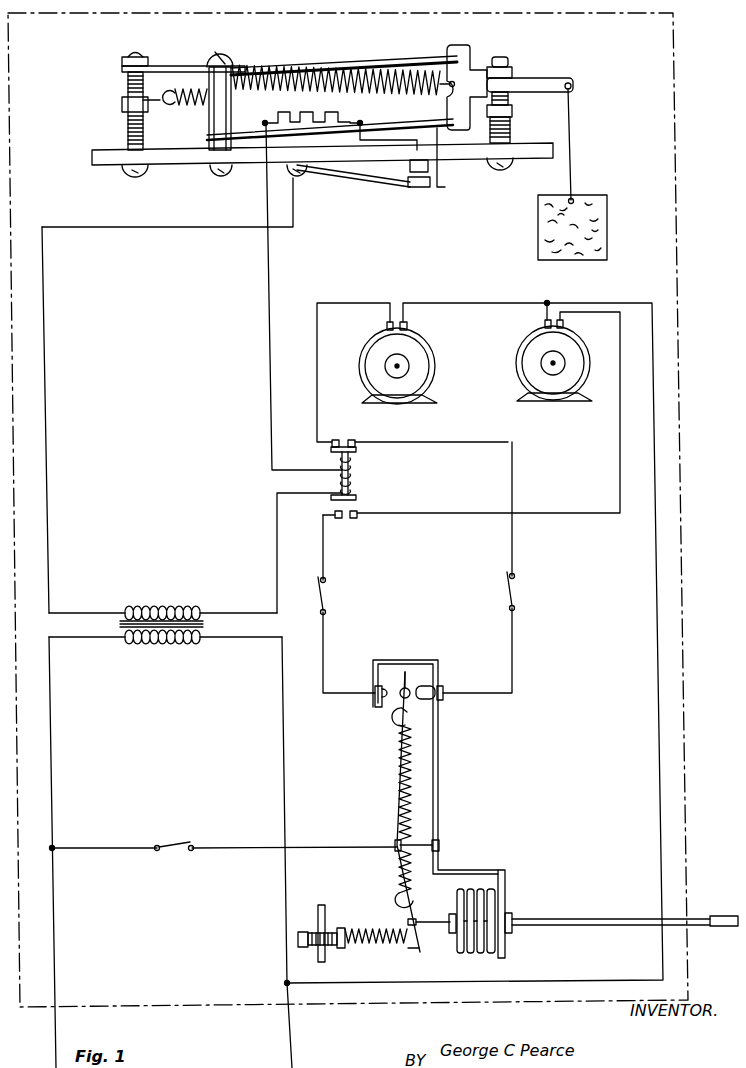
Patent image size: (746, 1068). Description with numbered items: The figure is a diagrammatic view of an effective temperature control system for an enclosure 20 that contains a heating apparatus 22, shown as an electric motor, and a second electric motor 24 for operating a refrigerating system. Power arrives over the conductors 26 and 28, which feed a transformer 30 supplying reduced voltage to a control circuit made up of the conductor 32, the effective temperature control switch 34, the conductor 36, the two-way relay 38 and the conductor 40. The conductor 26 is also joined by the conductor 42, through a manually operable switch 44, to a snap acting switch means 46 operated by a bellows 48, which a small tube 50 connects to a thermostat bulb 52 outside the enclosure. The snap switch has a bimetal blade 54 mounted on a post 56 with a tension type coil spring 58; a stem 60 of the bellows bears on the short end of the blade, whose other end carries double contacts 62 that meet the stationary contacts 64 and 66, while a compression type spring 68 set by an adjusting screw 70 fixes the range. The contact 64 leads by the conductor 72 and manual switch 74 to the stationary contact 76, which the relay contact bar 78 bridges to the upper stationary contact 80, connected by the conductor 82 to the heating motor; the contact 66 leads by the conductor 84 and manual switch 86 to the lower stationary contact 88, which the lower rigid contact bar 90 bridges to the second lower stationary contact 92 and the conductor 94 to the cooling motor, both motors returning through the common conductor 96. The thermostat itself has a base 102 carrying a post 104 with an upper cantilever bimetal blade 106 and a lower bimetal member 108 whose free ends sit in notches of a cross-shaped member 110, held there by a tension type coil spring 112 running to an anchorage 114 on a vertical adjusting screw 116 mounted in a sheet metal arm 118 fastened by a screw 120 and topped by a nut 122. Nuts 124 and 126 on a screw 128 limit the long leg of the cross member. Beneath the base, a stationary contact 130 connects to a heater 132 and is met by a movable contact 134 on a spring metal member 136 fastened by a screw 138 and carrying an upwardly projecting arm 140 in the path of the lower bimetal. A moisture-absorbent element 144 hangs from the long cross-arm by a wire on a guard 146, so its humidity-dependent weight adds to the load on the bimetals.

The enclosure 20 is at (674, 298).
The heating apparatus 22 is at (417, 350).
The electric motor 24 is at (573, 352).
The electrical conductor 26 is at (54, 1050).
The electrical conductor 28 is at (292, 1063).
The transformer 30 is at (140, 642).
The conductor 32 is at (48, 498).
The effective temperature control switch 34 is at (385, 187).
The conductor 36 is at (272, 372).
The two-way relay 38 is at (352, 474).
The conductor 40 is at (277, 580).
The conductor 42 is at (212, 846).
The manually operable switch 44 is at (180, 843).
The snap acting switch means 46 is at (438, 807).
The bellows 48 is at (460, 955).
The small tube 50 is at (568, 919).
The thermostat bulb 52 is at (724, 918).
The bimetal blade 54 is at (398, 819).
The post 56 is at (425, 841).
The tension type coil spring 58 is at (422, 770).
The stem 60 is at (428, 930).
The double contacts 62 is at (400, 697).
The stationary contact 64 is at (427, 690).
The stationary contact 66 is at (368, 700).
The compression type spring 68 is at (386, 930).
The adjusting screw 70 is at (308, 935).
The conductor 72 is at (514, 657).
The manual switch 74 is at (514, 587).
The stationary contact 76 is at (352, 439).
The relay contact bar 78 is at (356, 450).
The upper stationary contact 80 is at (335, 439).
The conductor 82 is at (317, 381).
The conductor 84 is at (326, 637).
The manual switch 86 is at (322, 597).
The lower stationary contact 88 is at (340, 520).
The lower rigid contact bar 90 is at (357, 498).
The second lower stationary contact 92 is at (357, 520).
The conductor 94 is at (452, 513).
The common conductor 96 is at (657, 708).
The base 102 is at (191, 160).
The post 104 is at (231, 157).
The cantilever bimetal blade 106 is at (355, 66).
The second resilient cantilever bimetal member 108 is at (405, 126).
The cross-shaped member 110 is at (462, 105).
The tension type coil spring 112 is at (444, 60).
The anchorage 114 is at (163, 100).
The vertical adjusting screw 116 is at (129, 135).
The sheet metal arm 118 is at (183, 57).
The screw 120 is at (225, 62).
The nut 122 is at (122, 61).
The nut 124 is at (515, 73).
The nut 126 is at (513, 112).
The screw 128 is at (509, 133).
The stationary contact 130 is at (430, 167).
The heater 132 is at (265, 121).
The movable contact 134 is at (430, 186).
The spring metal member 136 is at (364, 183).
The screw 138 is at (296, 178).
The upwardly projecting arm 140 is at (446, 187).
The element 144 is at (545, 237).
The guard 146 is at (573, 143).